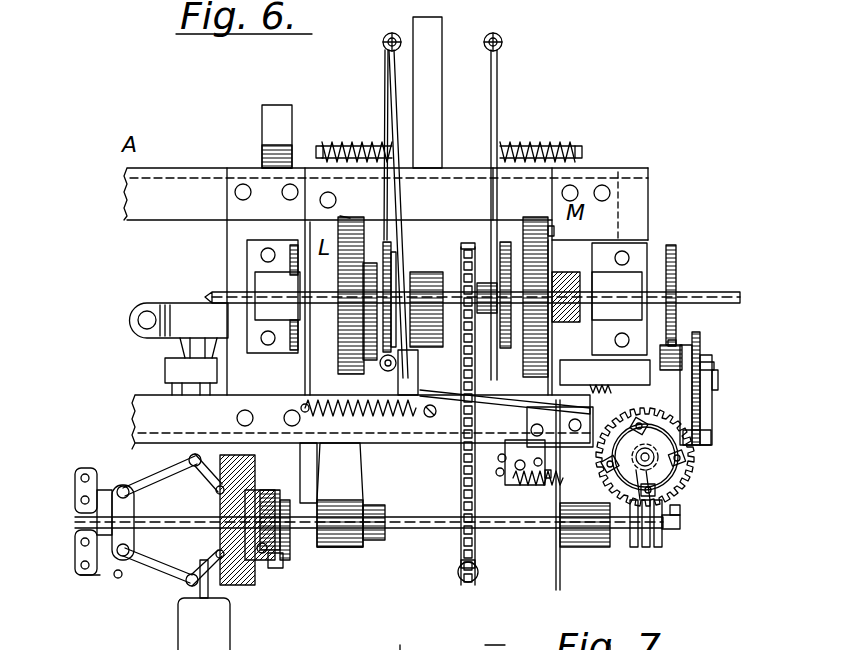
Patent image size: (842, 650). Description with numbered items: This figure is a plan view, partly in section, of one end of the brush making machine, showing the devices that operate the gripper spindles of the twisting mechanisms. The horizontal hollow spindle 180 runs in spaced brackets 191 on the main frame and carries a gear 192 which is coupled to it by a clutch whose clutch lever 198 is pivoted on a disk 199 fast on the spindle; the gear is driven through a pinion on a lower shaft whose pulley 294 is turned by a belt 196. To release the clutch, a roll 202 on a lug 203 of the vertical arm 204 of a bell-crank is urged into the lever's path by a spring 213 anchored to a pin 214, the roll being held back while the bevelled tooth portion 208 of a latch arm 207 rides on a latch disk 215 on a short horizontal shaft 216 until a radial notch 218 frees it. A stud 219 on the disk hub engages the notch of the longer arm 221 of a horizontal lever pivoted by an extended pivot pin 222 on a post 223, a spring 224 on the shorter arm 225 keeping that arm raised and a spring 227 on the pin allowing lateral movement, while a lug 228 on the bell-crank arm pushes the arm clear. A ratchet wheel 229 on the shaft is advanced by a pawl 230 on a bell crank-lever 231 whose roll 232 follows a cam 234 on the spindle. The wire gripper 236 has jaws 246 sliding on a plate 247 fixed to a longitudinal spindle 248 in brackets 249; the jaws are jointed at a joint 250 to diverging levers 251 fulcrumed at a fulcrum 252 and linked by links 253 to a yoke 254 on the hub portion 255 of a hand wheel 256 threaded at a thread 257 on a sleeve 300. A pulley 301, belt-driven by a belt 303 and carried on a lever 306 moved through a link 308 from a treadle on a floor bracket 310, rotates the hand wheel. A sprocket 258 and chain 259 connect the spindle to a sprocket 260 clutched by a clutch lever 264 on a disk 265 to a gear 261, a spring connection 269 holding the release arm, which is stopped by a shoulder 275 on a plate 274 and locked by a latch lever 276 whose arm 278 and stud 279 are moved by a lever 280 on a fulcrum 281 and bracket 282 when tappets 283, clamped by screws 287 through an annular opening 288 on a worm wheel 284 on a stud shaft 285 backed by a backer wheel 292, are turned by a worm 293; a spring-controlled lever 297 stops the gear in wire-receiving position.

The hollow spindle 180 is at (210, 295).
The brackets 191 is at (447, 297).
The gear 192 is at (350, 218).
The belt 196 is at (430, 32).
The clutch lever 198 is at (367, 220).
The disk 199 is at (385, 238).
The roll 202 is at (362, 353).
The lug 203 is at (393, 407).
The vertical arm 204 is at (367, 378).
The latch arm 207 is at (492, 330).
The bevelled tooth portion 208 is at (585, 384).
The spring 213 is at (343, 420).
The pin 214 is at (300, 403).
The latch disk 215 is at (563, 322).
The short horizontal shaft 216 is at (712, 378).
The radial notch 218 is at (556, 420).
The stud 219 is at (393, 250).
The longer arm 221 is at (465, 243).
The pivot pin 222 is at (316, 150).
The post 223 is at (392, 123).
The spring 224 is at (388, 36).
The shorter arm 225 is at (388, 60).
The spring 227 is at (360, 140).
The lug 228 is at (420, 364).
The ratchet wheel 229 is at (700, 400).
The pawl 230 is at (707, 438).
The bell crank-lever 231 is at (680, 413).
The roll 232 is at (672, 347).
The cam 234 is at (672, 245).
The wire gripper 236 is at (77, 475).
The jaws 246 is at (80, 517).
The plate 247 is at (105, 573).
The longitudinal spindle 248 is at (118, 578).
The brackets 249 is at (352, 540).
The joint 250 is at (85, 542).
The diverging levers 251 is at (147, 477).
The fulcrum 252 is at (123, 488).
The links 253 is at (215, 460).
The yoke 254 is at (222, 480).
The hub portion 255 is at (197, 636).
The hand wheel 256 is at (262, 553).
The thread 257 is at (286, 565).
The sprocket 258 is at (472, 574).
The chain 259 is at (462, 570).
The sprocket 260 is at (478, 222).
The gear 261 is at (527, 217).
The clutch lever 264 is at (554, 230).
The disk 265 is at (562, 165).
The spring connection 269 is at (702, 366).
The plate 274 is at (570, 470).
The shoulder 275 is at (612, 322).
The latch lever 276 is at (498, 410).
The arm 278 is at (497, 476).
The stud 279 is at (500, 482).
The lever 280 is at (500, 460).
The fulcrum 281 is at (540, 468).
The bracket 282 is at (548, 478).
The tappets 283 is at (670, 500).
The worm wheel 284 is at (687, 487).
The stud shaft 285 is at (654, 455).
The screw 287 is at (690, 462).
The annular opening 288 is at (690, 482).
The backer wheel 292 is at (633, 480).
The worm 293 is at (673, 530).
The pulley 294 is at (456, 243).
The spring-controlled lever 297 is at (493, 72).
The sleeve 300 is at (208, 527).
The pulley 301 is at (278, 570).
The belt 303 is at (277, 108).
The lever 306 is at (185, 487).
The link 308 is at (205, 368).
The floor bracket 310 is at (140, 318).